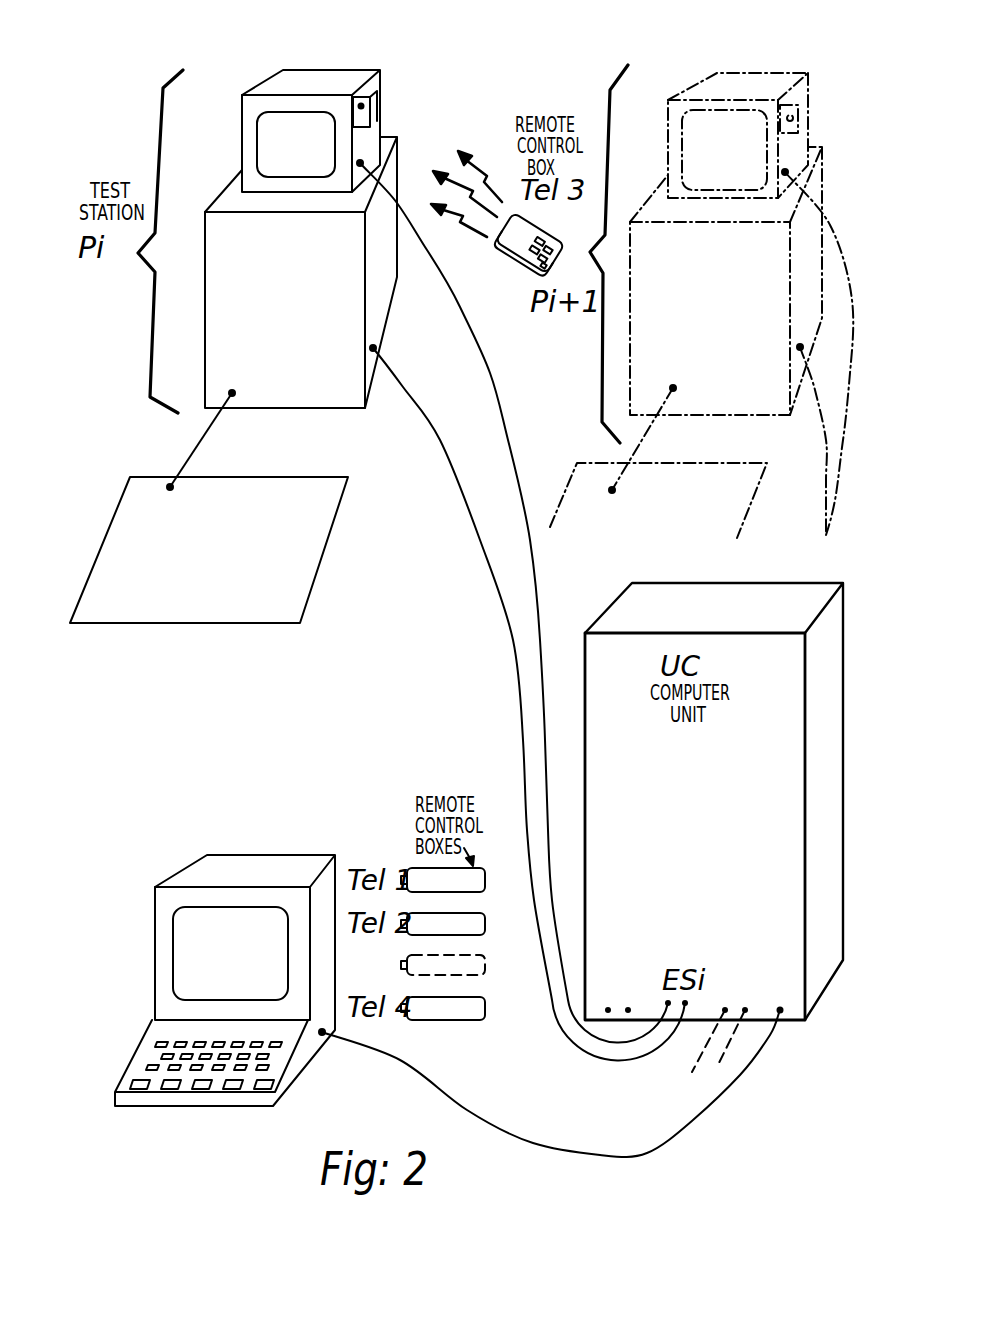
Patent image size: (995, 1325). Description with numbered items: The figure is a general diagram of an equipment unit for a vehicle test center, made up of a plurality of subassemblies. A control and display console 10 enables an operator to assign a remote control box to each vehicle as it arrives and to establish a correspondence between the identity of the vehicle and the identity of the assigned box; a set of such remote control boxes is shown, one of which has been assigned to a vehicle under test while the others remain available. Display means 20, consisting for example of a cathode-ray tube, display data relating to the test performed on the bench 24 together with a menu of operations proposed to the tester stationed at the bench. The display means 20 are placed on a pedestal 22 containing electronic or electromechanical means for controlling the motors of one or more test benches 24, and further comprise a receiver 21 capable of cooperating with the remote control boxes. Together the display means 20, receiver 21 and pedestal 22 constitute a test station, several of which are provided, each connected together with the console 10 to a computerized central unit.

The control and display console 10 is at (165, 930).
The display means 20 is at (265, 87).
The receiver 21 is at (378, 98).
The pedestal 22 is at (301, 272).
The bench 24 is at (209, 508).